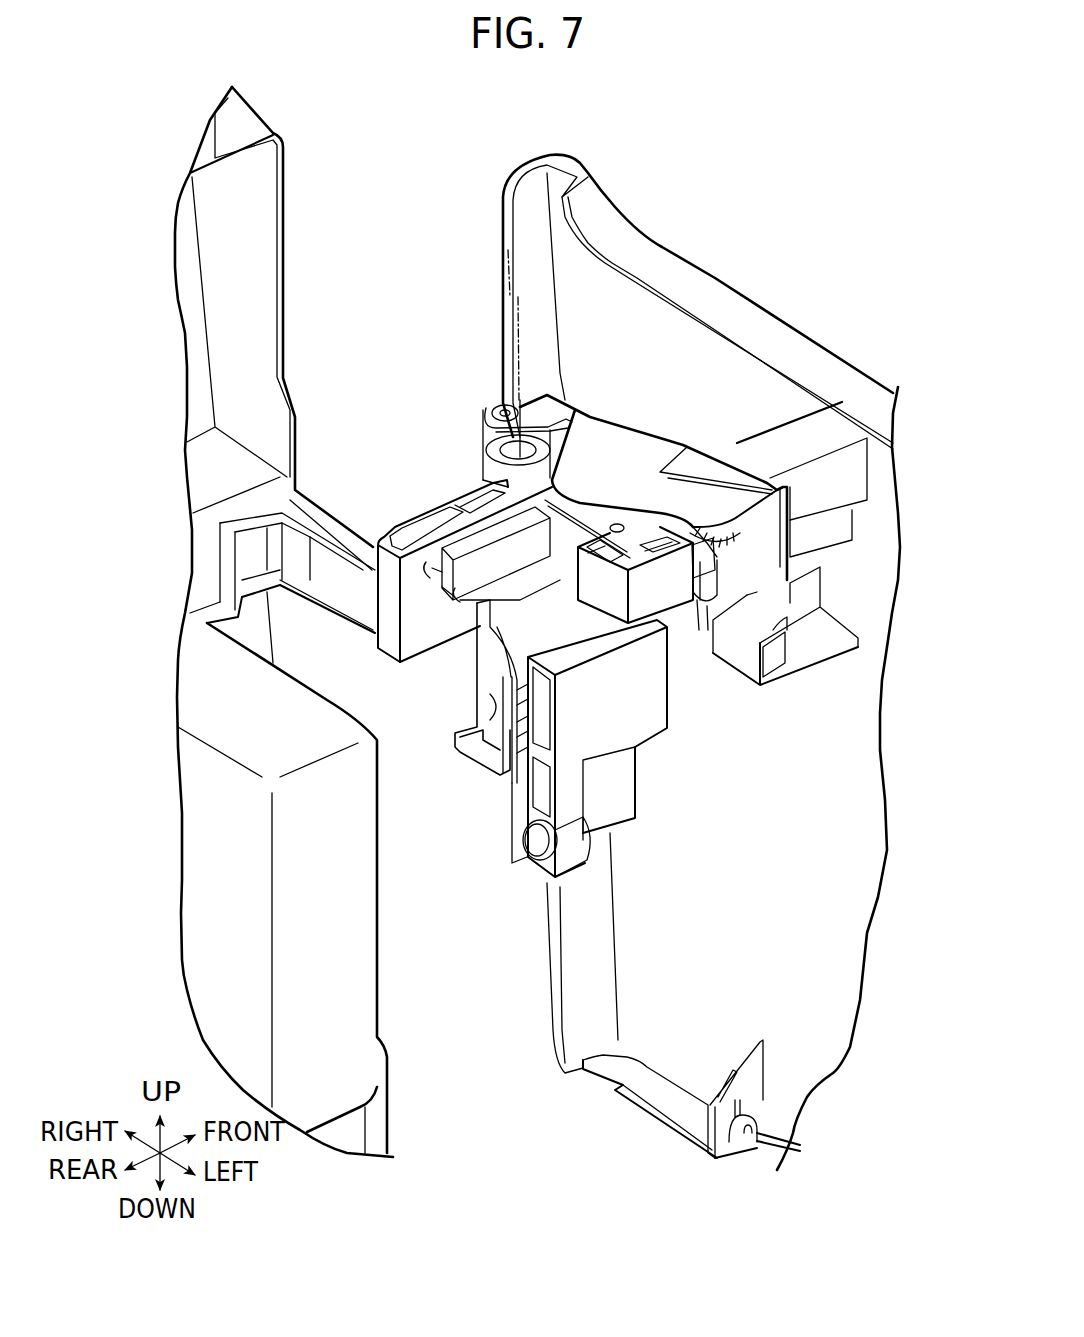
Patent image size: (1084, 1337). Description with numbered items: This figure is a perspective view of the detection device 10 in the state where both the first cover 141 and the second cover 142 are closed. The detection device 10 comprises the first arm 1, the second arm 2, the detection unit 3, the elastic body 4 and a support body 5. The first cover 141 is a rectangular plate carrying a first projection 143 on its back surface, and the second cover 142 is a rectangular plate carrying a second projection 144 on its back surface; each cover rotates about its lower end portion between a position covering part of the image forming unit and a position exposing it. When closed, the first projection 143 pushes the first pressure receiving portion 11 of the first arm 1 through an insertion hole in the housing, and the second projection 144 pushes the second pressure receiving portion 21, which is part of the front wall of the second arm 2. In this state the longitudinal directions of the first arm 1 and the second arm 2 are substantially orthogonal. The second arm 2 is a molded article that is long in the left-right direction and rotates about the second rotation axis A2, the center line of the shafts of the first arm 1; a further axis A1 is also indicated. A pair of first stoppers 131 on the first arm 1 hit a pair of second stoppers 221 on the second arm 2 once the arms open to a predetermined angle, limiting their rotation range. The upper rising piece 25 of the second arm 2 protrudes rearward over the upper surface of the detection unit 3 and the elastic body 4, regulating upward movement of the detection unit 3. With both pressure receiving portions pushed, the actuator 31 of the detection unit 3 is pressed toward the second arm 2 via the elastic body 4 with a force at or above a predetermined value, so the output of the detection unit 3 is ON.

The first arm 1 is at (464, 547).
The second arm 2 is at (653, 461).
The detection unit 3 is at (634, 540).
The elastic body 4 is at (727, 542).
The support body 5 is at (640, 788).
The detection device 10 is at (380, 412).
The first pressure receiving portion 11 is at (403, 525).
The second pressure receiving portion 21 is at (722, 470).
The rising piece 25 is at (588, 488).
The actuator 31 is at (703, 565).
The first stopper 131 is at (485, 412).
The first cover 141 is at (284, 180).
The second cover 142 is at (690, 260).
The first projection 143 is at (355, 600).
The second projection 144 is at (847, 478).
The second stopper 221 is at (497, 403).
The axis A1 is at (520, 345).
The second rotation axis A2 is at (507, 283).